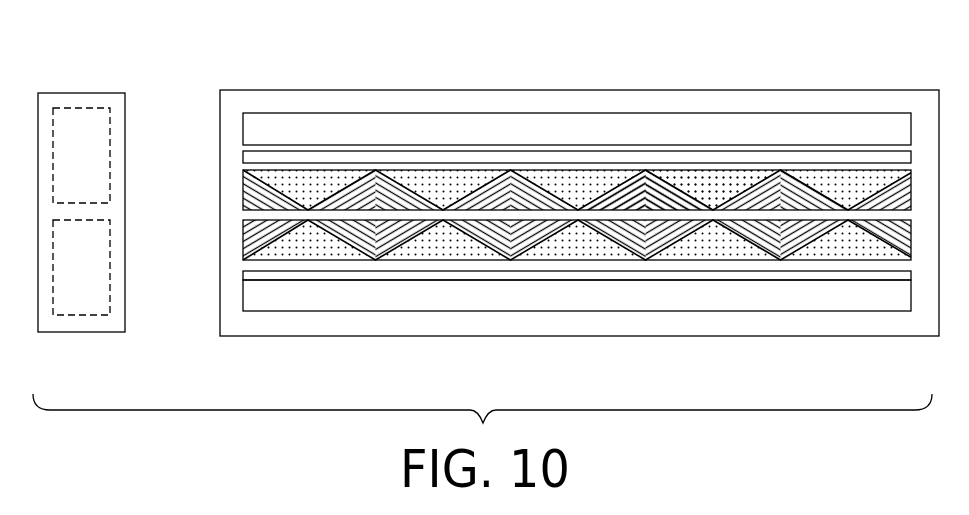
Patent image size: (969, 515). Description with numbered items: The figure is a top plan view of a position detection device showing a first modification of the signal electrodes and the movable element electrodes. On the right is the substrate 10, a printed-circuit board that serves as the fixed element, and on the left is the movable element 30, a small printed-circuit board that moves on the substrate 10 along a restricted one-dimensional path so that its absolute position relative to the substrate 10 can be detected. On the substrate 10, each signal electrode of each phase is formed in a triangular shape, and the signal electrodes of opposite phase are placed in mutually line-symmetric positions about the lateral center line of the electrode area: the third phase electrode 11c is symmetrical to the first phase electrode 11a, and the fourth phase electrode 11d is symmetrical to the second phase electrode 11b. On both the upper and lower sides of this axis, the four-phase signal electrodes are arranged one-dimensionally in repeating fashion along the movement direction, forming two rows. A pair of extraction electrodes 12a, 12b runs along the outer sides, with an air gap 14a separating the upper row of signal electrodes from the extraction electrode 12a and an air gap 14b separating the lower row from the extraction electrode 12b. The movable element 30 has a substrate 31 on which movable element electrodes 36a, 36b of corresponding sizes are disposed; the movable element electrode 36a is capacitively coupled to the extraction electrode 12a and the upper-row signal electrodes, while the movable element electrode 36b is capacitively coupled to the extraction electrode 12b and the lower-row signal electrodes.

The substrate 10 is at (848, 90).
The first phase electrode 11a is at (512, 185).
The second phase electrode 11b is at (577, 185).
The third phase electrode 11c is at (643, 185).
The fourth phase electrode 11d is at (708, 185).
The extraction electrode 12a is at (307, 113).
The extraction electrode 12b is at (315, 311).
The air gap 14a is at (353, 151).
The air gap 14b is at (357, 280).
The movable element 30 is at (52, 71).
The substrate 31 is at (89, 93).
The movable element electrode 36a is at (108, 153).
The movable element electrode 36b is at (108, 267).